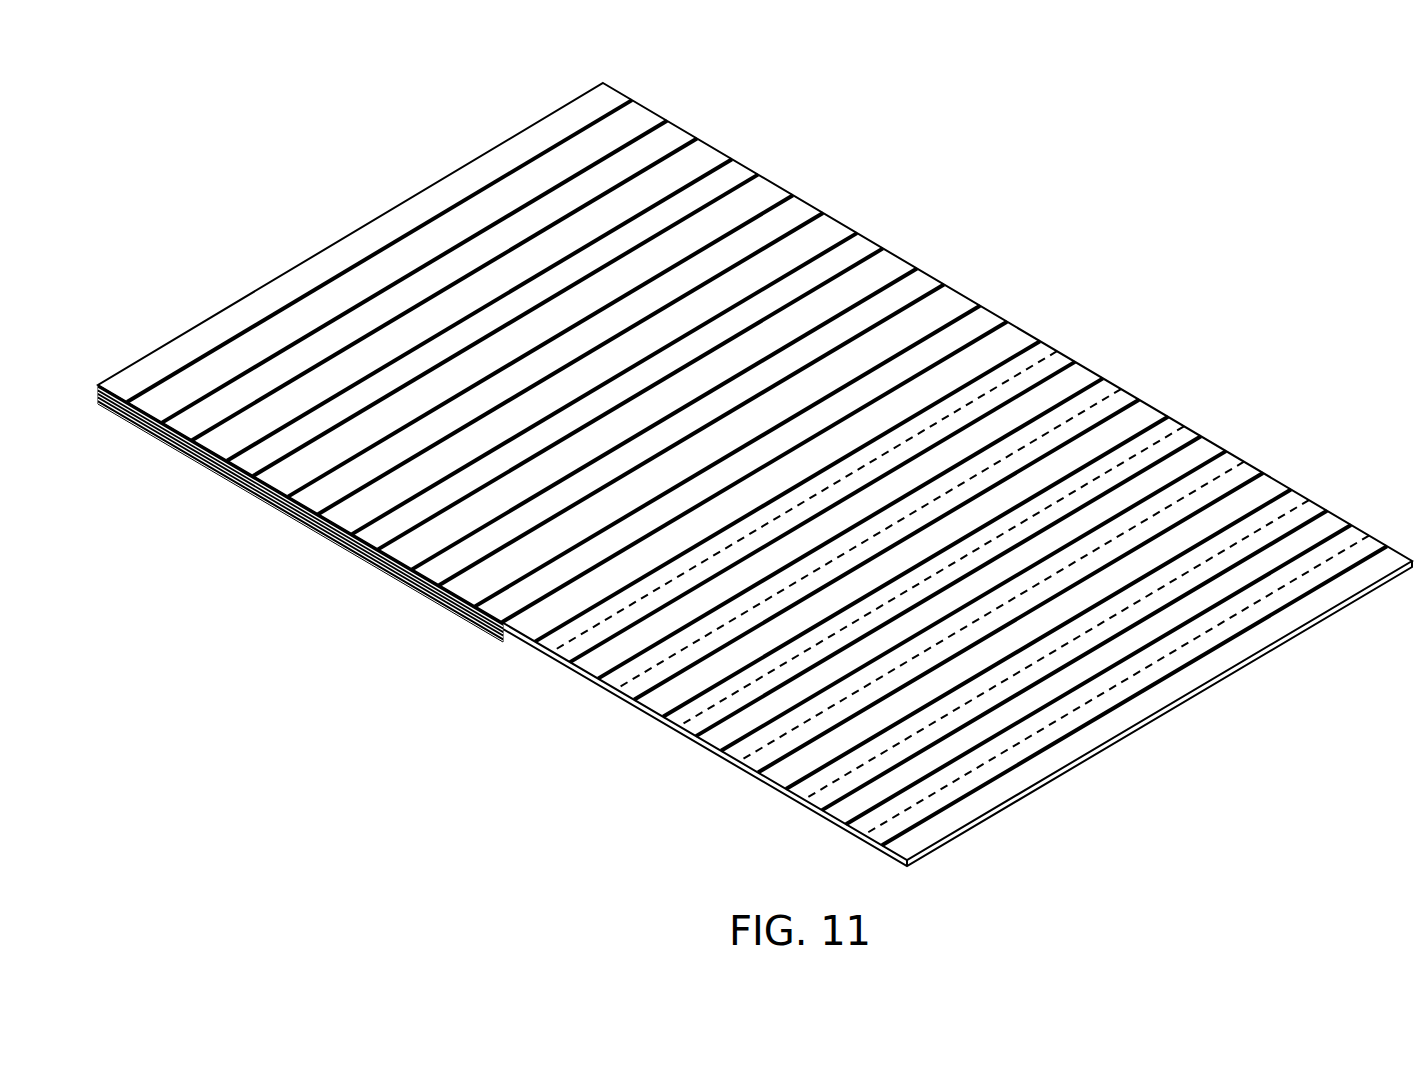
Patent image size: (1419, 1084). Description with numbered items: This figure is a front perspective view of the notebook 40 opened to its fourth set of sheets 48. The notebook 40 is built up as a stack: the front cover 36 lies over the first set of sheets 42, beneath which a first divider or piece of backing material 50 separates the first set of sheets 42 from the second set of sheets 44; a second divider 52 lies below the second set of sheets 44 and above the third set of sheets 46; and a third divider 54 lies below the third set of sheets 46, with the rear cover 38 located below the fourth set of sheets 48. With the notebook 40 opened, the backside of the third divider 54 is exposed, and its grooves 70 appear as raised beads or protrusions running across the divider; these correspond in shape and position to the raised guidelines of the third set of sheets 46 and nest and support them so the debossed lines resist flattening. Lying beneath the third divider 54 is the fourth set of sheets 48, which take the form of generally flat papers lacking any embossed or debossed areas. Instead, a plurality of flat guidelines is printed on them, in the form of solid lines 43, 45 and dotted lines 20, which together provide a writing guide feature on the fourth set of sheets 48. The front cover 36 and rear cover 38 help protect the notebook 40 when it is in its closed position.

The notebook 40 is at (755, 471).
The rear cover 38 is at (805, 797).
The front cover 36 is at (156, 438).
The first set of sheets 42 is at (198, 463).
The first divider 50 is at (243, 488).
The second set of sheets 44 is at (308, 522).
The second divider 52 is at (378, 560).
The third set of sheets 46 is at (430, 586).
The grooves 70 is at (493, 183).
The third divider 54 is at (778, 203).
The fourth set of sheets 48 is at (1080, 370).
The solid lines 43 is at (1137, 426).
The solid lines 45 is at (1196, 443).
The dotted lines 20 is at (1163, 439).